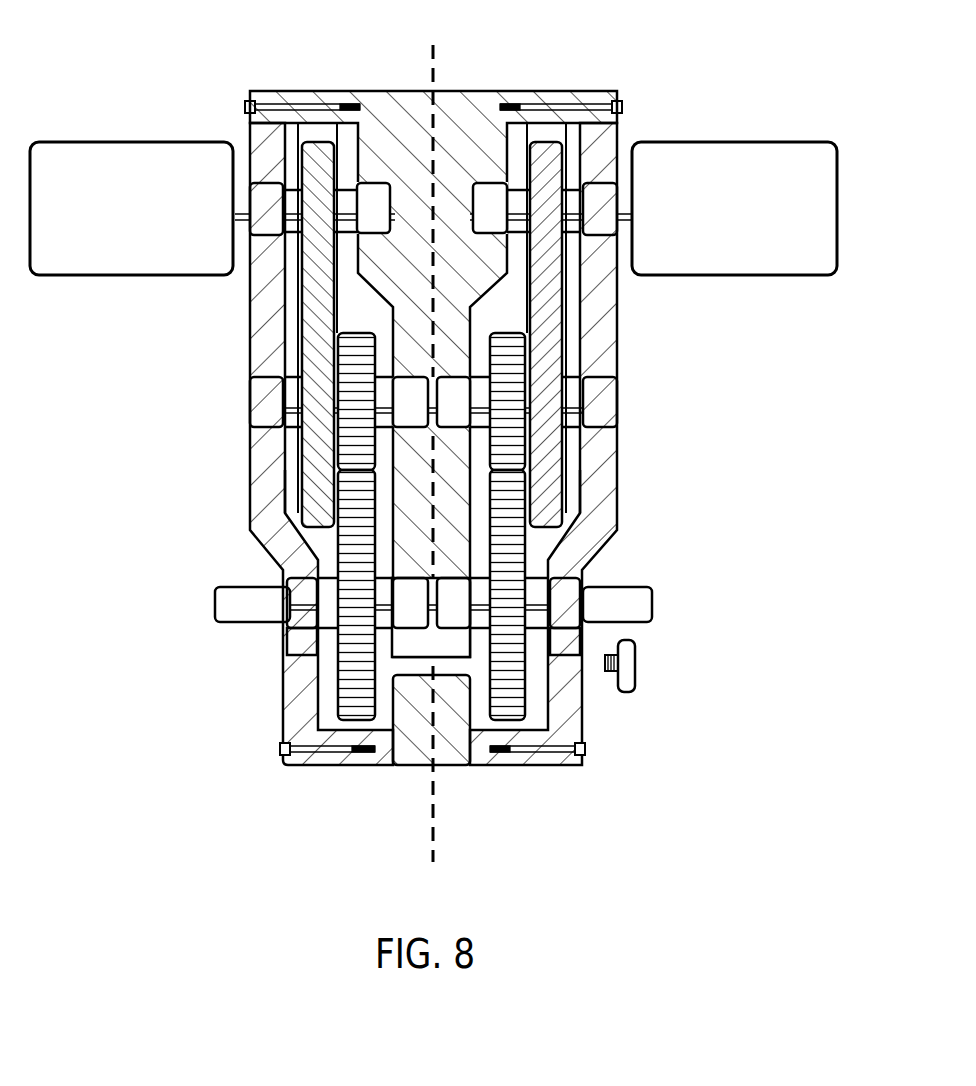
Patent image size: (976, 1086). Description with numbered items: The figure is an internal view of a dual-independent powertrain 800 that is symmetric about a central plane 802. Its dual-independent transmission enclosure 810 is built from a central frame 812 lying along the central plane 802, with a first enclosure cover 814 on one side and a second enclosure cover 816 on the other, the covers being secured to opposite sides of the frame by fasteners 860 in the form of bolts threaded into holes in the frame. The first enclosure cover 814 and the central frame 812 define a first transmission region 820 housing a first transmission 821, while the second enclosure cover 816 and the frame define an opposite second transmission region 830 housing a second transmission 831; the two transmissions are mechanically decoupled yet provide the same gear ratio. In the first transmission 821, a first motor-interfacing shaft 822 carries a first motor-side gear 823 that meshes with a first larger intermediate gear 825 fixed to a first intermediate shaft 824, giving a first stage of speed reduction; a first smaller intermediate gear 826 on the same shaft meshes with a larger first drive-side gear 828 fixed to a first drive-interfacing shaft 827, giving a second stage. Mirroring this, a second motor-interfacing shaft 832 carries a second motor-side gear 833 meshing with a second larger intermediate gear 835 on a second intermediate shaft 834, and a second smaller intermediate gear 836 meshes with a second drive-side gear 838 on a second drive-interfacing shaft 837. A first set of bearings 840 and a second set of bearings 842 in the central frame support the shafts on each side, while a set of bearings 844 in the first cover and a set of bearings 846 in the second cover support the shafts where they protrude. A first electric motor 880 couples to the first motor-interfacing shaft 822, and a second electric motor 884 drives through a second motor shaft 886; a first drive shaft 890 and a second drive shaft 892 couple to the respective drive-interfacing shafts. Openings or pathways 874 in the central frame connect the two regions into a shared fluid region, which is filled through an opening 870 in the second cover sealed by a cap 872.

The dual-independent powertrain 800 is at (433, 460).
The central plane 802 is at (432, 453).
The dual-independent transmission enclosure 810 is at (433, 446).
The central frame 812 is at (414, 101).
The first enclosure cover 814 is at (283, 96).
The second enclosure cover 816 is at (600, 92).
The first transmission region 820 is at (277, 404).
The first transmission 821 is at (292, 482).
The first motor-interfacing shaft 822 is at (348, 178).
The first motor-side gear 823 is at (310, 150).
The first intermediate shaft 824 is at (297, 407).
The first larger intermediate gear 825 is at (318, 345).
The first smaller intermediate gear 826 is at (298, 496).
The first drive-interfacing shaft 827 is at (383, 606).
The first drive-side gear 828 is at (354, 695).
The second transmission region 830 is at (597, 451).
The second transmission 831 is at (568, 487).
The second motor-interfacing shaft 832 is at (512, 185).
The second motor-side gear 833 is at (553, 170).
The second intermediate shaft 834 is at (570, 403).
The second larger intermediate gear 835 is at (552, 342).
The second smaller intermediate gear 836 is at (508, 362).
The second drive-interfacing shaft 837 is at (487, 603).
The second drive-side gear 838 is at (505, 713).
The first set of bearings 840 is at (383, 203).
The second set of bearings 842 is at (487, 178).
The set of bearings 844 is at (258, 223).
The set of bearings 846 is at (603, 228).
The fasteners 860 is at (310, 108).
The opening 870 is at (645, 687).
The cap 872 is at (632, 665).
The openings or pathways 874 is at (420, 665).
The first electric motor 880 is at (130, 254).
The second electric motor 884 is at (787, 258).
The second motor shaft 886 is at (600, 209).
The first drive shaft 890 is at (228, 604).
The second drive shaft 892 is at (643, 603).